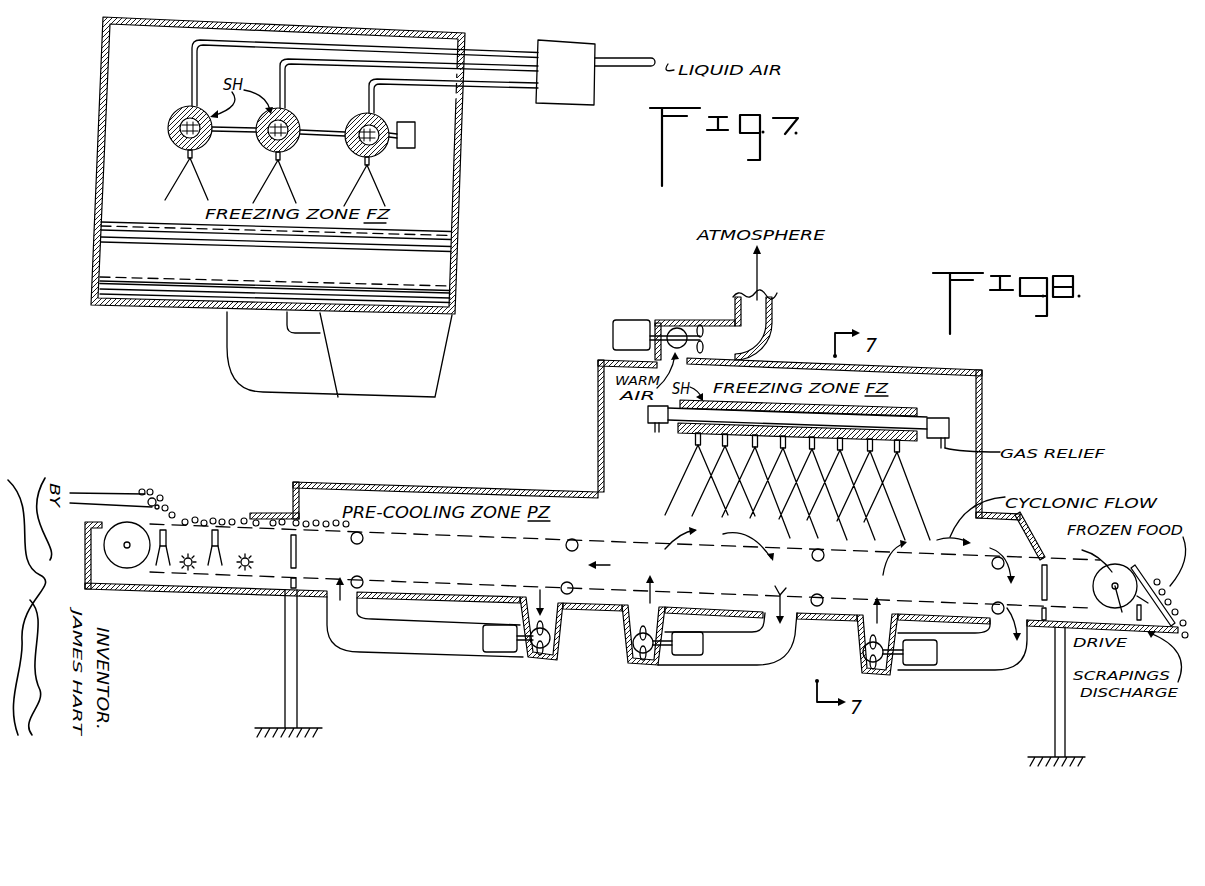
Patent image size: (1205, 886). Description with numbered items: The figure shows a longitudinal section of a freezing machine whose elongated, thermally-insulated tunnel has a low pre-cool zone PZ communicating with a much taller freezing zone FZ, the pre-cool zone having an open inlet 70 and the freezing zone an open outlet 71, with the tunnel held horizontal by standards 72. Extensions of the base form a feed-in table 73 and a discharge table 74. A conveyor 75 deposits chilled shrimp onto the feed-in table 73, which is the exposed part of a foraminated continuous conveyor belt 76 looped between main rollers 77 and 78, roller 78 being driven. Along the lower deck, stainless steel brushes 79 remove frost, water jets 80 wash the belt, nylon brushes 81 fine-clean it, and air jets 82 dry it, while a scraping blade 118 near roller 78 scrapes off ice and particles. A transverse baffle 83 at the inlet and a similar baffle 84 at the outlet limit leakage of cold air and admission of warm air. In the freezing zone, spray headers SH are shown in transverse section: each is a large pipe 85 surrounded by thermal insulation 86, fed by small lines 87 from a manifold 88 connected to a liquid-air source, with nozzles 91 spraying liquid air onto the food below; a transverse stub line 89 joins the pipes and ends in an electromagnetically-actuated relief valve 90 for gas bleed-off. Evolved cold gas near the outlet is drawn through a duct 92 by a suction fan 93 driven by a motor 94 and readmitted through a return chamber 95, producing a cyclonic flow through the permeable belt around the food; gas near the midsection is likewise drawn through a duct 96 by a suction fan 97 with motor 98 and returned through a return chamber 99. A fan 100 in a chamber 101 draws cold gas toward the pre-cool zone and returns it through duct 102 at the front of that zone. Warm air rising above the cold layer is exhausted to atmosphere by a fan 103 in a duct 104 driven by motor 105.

In FIG. 6, the open inlet 70 is at (250, 516).
In FIG. 6, the open outlet 71 is at (1048, 555).
In FIG. 6, the standards 72 is at (293, 674).
In FIG. 6, the feed-in table 73 is at (190, 517).
In FIG. 6, the discharge table 74 is at (1142, 552).
In FIG. 6, the conveyor 75 is at (98, 500).
In FIG. 7, the continuous conveyor belt 76 is at (392, 234).
In FIG. 6, the continuous conveyor belt 76 is at (602, 541).
In FIG. 6, the main roller 77 is at (114, 560).
In FIG. 6, the main roller 78 is at (1124, 559).
In FIG. 6, the stainless steel brushes 79 is at (246, 572).
In FIG. 6, the water jets 80 is at (219, 548).
In FIG. 6, the nylon brushes 81 is at (190, 572).
In FIG. 6, the air jets 82 is at (167, 540).
In FIG. 6, the transverse baffle 83 is at (297, 553).
In FIG. 7, the baffle 84 is at (435, 274).
In FIG. 6, the baffle 84 is at (1048, 580).
In FIG. 7, the pipe 85 is at (296, 148).
In FIG. 6, the pipe 85 is at (922, 419).
In FIG. 7, the thermal insulation 86 is at (372, 154).
In FIG. 6, the thermal insulation 86 is at (890, 406).
In FIG. 7, the lines 87 is at (490, 87).
In FIG. 7, the manifold 88 is at (572, 47).
In FIG. 7, the transverse stub line 89 is at (313, 129).
In FIG. 7, the relief valve 90 is at (415, 134).
In FIG. 6, the relief valve 90 is at (942, 449).
In FIG. 7, the nozzles 91 is at (270, 149).
In FIG. 6, the nozzles 91 is at (724, 445).
In FIG. 6, the duct 92 is at (996, 662).
In FIG. 6, the suction fan 93 is at (876, 665).
In FIG. 6, the motor 94 is at (937, 653).
In FIG. 6, the return chamber 95 is at (856, 647).
In FIG. 6, the duct 96 is at (751, 659).
In FIG. 6, the suction fan 97 is at (630, 657).
In FIG. 6, the motor 98 is at (685, 656).
In FIG. 6, the return chamber 99 is at (623, 637).
In FIG. 6, the fan 100 is at (537, 657).
In FIG. 6, the chamber 101 is at (568, 658).
In FIG. 6, the duct 102 is at (410, 650).
In FIG. 6, the fan 103 is at (737, 275).
In FIG. 6, the duct 104 is at (772, 311).
In FIG. 6, the motor 105 is at (613, 322).
In FIG. 6, the scraping blade 118 is at (1101, 577).